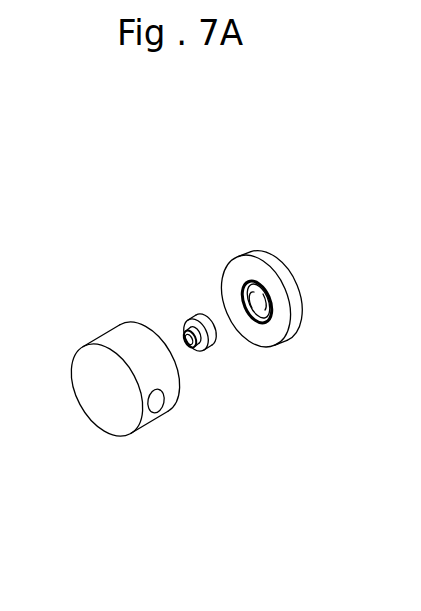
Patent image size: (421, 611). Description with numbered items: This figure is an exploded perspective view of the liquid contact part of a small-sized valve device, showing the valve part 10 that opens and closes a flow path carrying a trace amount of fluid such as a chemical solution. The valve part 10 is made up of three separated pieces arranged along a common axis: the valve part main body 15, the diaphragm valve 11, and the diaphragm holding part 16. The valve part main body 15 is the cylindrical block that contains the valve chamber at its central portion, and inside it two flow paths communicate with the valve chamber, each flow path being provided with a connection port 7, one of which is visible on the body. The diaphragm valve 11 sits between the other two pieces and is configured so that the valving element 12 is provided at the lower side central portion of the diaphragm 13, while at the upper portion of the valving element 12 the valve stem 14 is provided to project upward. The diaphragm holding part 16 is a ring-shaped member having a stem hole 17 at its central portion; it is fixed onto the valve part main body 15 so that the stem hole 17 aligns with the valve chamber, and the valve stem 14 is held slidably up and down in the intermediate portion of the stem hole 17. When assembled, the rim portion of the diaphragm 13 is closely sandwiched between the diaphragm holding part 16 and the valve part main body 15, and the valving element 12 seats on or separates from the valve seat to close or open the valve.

The valve part 10 is at (128, 224).
The connection port 7 is at (152, 416).
The valve part main body 15 is at (160, 413).
The diaphragm valve 11 is at (213, 354).
The diaphragm 13 is at (202, 355).
The valve stem 14 is at (214, 328).
The valving element 12 is at (184, 331).
The diaphragm holding part 16 is at (293, 342).
The stem hole 17 is at (241, 282).